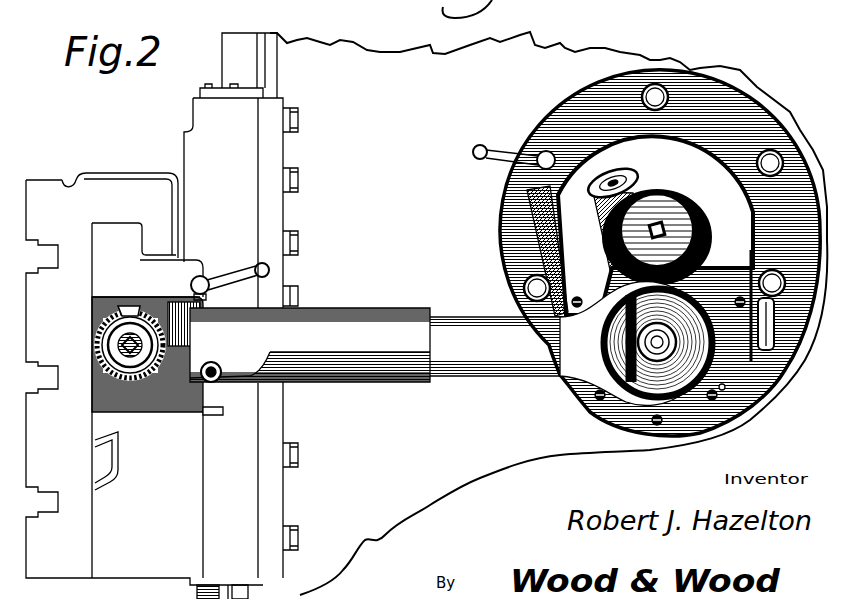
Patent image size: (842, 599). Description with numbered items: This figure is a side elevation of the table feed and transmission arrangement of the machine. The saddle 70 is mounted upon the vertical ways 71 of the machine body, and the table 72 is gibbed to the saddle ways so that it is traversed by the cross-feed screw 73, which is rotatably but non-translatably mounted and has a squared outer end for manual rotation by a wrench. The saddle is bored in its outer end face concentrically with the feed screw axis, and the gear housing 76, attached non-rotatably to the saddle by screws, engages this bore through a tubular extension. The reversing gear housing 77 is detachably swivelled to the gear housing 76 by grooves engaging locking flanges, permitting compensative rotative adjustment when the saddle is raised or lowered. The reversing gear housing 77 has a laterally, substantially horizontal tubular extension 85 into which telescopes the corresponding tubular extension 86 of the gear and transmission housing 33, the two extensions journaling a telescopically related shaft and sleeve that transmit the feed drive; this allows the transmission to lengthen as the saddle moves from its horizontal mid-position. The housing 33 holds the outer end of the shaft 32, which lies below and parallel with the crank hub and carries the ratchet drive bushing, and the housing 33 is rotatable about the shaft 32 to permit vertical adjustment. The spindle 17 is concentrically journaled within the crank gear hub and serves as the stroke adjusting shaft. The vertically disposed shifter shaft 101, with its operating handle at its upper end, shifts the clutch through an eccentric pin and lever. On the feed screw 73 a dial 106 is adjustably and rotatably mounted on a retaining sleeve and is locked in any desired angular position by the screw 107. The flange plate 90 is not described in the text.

The spindle 17 is at (666, 224).
The shaft 32 is at (682, 316).
The gear and transmission housing 33 is at (757, 336).
The saddle 70 is at (245, 162).
The vertical ways 71 is at (248, 68).
The table 72 is at (68, 178).
The cross-feed screw 73 is at (92, 378).
The gear housing 76 is at (90, 318).
The reversing gear housing 77 is at (170, 300).
The tubular extension 85 is at (360, 307).
The tubular extension 86 is at (462, 318).
The flange plate 90 is at (700, 146).
The shifter shaft 101 is at (205, 278).
The dial 106 is at (148, 312).
The screw 107 is at (124, 304).